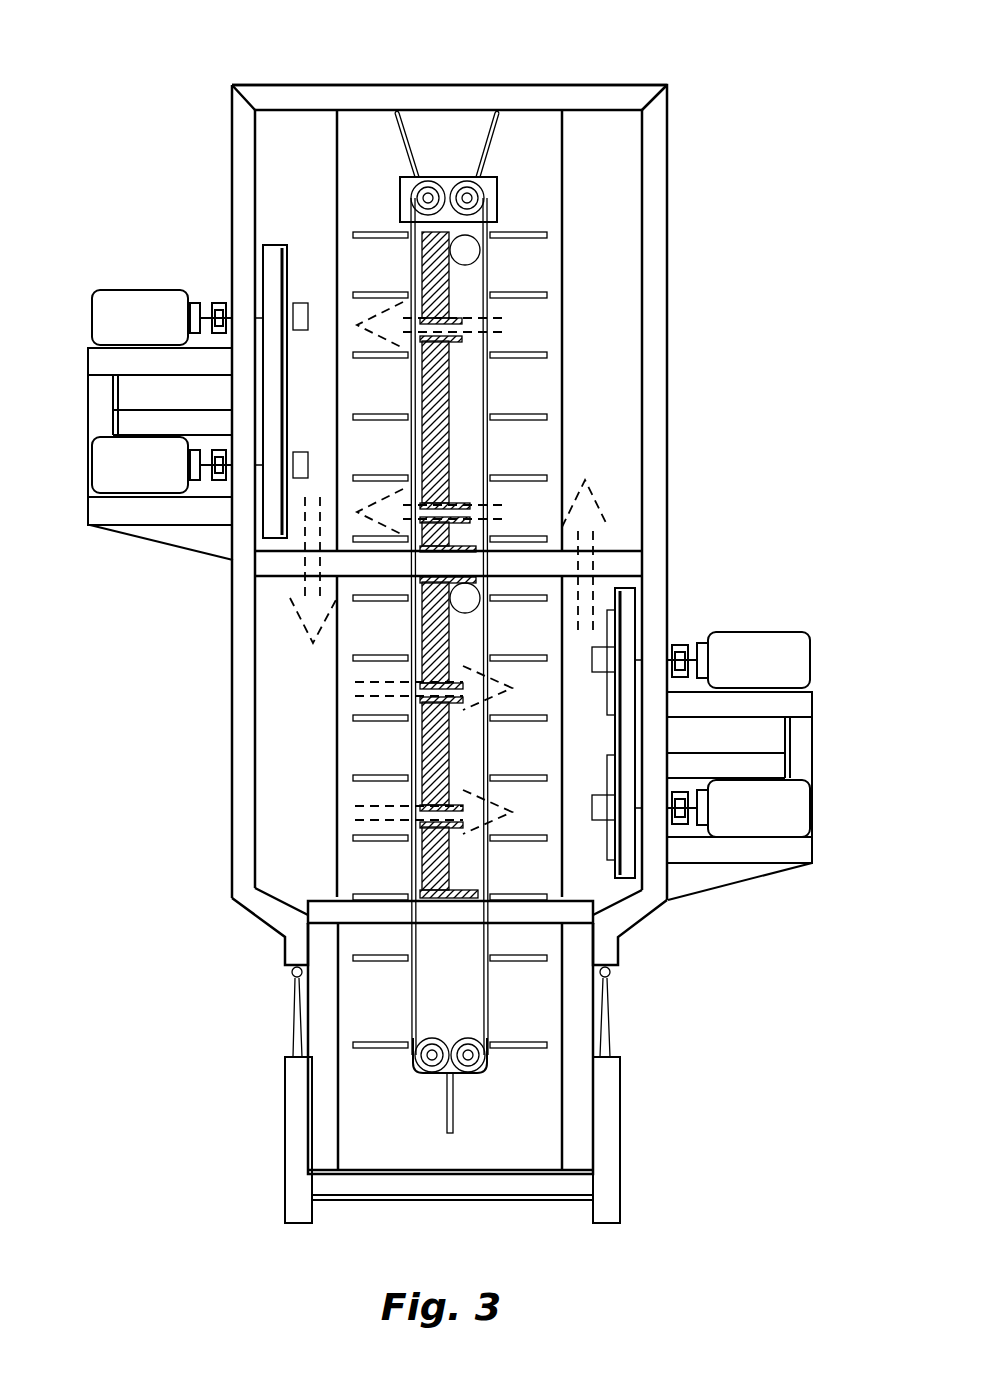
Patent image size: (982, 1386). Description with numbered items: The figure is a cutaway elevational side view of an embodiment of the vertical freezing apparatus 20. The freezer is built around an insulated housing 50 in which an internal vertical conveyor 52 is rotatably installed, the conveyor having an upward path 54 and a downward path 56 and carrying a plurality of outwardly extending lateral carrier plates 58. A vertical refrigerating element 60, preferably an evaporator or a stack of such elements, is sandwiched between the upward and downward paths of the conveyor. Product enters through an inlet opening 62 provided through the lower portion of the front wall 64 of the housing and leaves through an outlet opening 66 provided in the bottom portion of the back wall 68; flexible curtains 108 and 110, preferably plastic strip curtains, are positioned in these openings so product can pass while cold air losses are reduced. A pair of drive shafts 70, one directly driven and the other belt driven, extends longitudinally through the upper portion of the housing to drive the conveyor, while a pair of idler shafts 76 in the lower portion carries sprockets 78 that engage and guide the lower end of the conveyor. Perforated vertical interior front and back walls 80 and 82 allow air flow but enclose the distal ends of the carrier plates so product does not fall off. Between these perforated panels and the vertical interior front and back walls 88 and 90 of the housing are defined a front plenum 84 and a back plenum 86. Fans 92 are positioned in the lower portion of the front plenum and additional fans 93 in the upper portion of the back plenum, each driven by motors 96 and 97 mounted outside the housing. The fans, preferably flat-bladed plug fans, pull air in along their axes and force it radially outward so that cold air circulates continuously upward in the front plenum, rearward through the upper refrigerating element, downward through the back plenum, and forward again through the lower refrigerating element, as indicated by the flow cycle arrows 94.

The vertical freezing apparatus 20 is at (683, 78).
The insulated housing 50 is at (242, 760).
The internal vertical conveyor 52 is at (288, 565).
The downward path 56 is at (407, 630).
The upward path 54 is at (490, 452).
The lateral carrier plates 58 is at (532, 413).
The vertical refrigerating element 60 is at (288, 565).
The inlet opening 62 is at (617, 1018).
The front wall 64 is at (613, 1140).
The outlet opening 66 is at (287, 1005).
The back wall 68 is at (297, 1140).
The drive shafts 70 is at (457, 177).
The idler shafts 76 is at (432, 1072).
The sprockets 78 is at (432, 1038).
The perforated interior front wall 80 is at (563, 478).
The perforated interior back wall 82 is at (337, 742).
The front plenum 84 is at (612, 447).
The back plenum 86 is at (272, 605).
The interior front wall 88 is at (640, 150).
The interior back wall 90 is at (258, 148).
The fans 92 is at (625, 622).
The additional fans 93 is at (273, 253).
The flow cycle arrows 94 is at (363, 327).
The motors 96 is at (767, 650).
The motors 97 is at (146, 298).
The flexible curtain 108 is at (608, 1028).
The flexible curtain 110 is at (295, 1043).